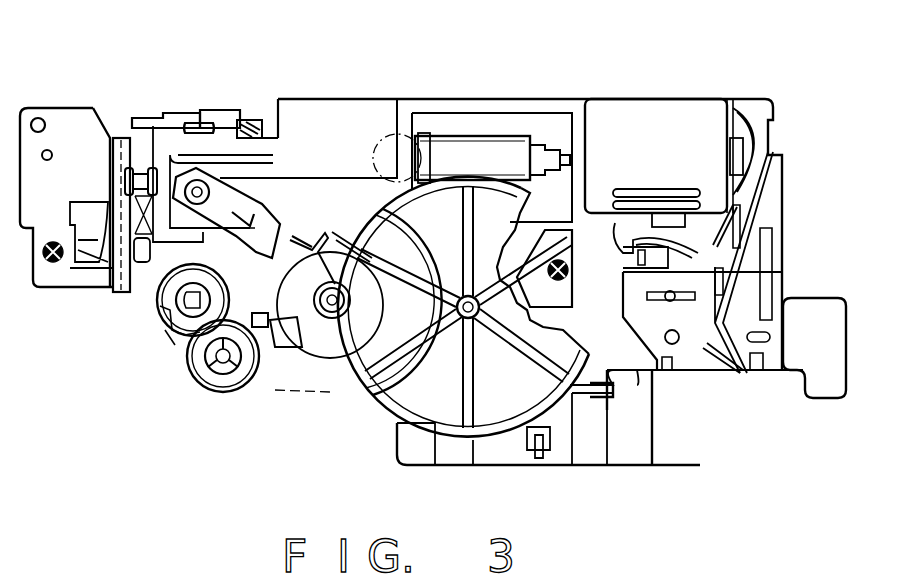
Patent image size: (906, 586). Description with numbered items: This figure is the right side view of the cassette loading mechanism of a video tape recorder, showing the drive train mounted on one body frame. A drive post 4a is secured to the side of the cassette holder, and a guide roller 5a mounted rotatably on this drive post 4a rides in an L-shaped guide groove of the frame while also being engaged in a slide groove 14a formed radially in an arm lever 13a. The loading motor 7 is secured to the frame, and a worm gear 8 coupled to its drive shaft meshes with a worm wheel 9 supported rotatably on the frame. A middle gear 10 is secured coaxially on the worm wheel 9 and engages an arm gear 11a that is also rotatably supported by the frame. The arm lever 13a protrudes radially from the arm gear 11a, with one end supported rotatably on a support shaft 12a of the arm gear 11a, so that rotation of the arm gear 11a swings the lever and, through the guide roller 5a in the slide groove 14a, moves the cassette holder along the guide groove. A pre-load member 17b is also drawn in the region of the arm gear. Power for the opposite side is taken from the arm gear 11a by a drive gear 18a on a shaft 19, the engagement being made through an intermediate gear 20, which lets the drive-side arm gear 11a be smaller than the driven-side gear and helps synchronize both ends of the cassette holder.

The drive post 4a is at (222, 175).
The guide roller 5a is at (170, 127).
The arm lever 13a is at (233, 124).
The slide groove 14a is at (254, 120).
The bracket 17b is at (309, 250).
The worm gear 8 is at (450, 140).
The loading motor (FL motor) 7 is at (688, 145).
The drive gear 18a is at (160, 313).
The shaft 19 is at (183, 318).
The intermediate gear 20 is at (207, 388).
The arm gear 11a is at (280, 385).
The support shaft 12a is at (324, 330).
The worm wheel 9 is at (380, 400).
The middle gear 10 is at (480, 318).